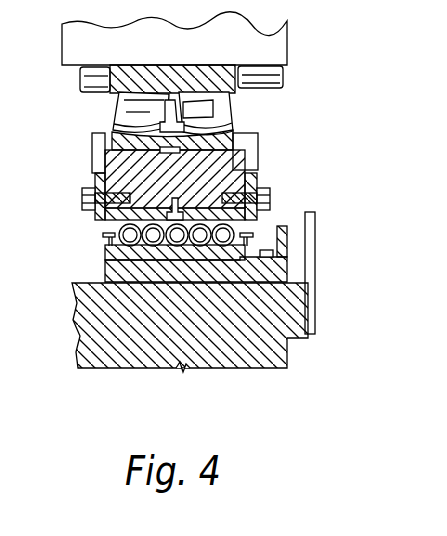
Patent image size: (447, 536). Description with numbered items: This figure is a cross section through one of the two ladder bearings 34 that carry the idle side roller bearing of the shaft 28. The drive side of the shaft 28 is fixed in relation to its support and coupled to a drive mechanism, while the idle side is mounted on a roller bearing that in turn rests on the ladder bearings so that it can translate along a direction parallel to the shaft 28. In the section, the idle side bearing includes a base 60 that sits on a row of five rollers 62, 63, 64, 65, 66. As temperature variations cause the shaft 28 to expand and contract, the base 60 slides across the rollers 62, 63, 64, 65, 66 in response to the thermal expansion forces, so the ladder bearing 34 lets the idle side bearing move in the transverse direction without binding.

The shaft 28 is at (63, 43).
The ladder bearing 34 is at (231, 142).
The base 60 is at (262, 216).
The roller 62 is at (188, 292).
The roller 63 is at (148, 244).
The roller 64 is at (180, 247).
The roller 65 is at (212, 250).
The roller 66 is at (243, 252).